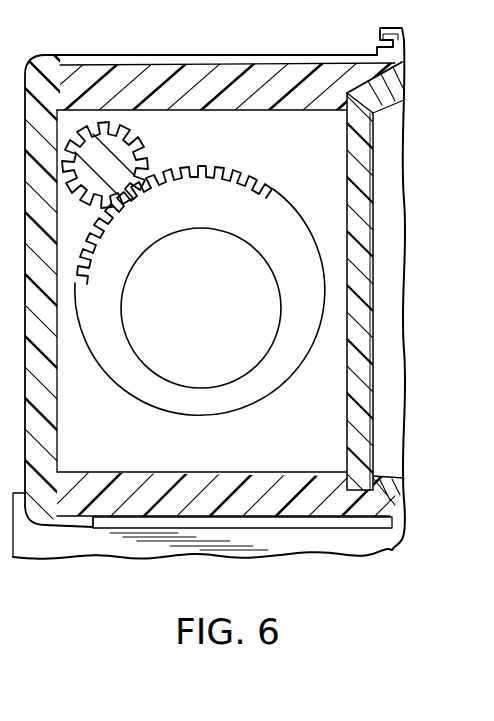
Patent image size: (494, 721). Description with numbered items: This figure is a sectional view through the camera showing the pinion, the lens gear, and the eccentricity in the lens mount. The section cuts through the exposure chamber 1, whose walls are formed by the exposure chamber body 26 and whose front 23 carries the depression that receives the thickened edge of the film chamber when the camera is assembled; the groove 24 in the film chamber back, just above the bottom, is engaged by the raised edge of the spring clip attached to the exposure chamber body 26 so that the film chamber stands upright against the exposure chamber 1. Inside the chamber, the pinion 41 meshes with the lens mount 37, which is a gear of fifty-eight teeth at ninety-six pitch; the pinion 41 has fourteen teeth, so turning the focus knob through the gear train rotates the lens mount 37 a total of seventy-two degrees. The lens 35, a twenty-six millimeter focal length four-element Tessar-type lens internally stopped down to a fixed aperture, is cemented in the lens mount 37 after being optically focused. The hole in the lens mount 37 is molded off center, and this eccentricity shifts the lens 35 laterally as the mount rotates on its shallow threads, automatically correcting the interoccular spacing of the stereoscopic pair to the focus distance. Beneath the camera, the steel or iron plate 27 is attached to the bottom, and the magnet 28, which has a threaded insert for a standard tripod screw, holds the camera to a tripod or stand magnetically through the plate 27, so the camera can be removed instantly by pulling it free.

The exposure chamber 1 is at (370, 571).
The front 23 is at (407, 108).
The groove 24 is at (404, 43).
The exposure chamber body 26 is at (185, 70).
The steel or iron plate 27 is at (273, 518).
The magnet 28 is at (117, 545).
The lens 35 is at (232, 262).
The lens mount 37 is at (264, 192).
The pinion 41 is at (127, 147).